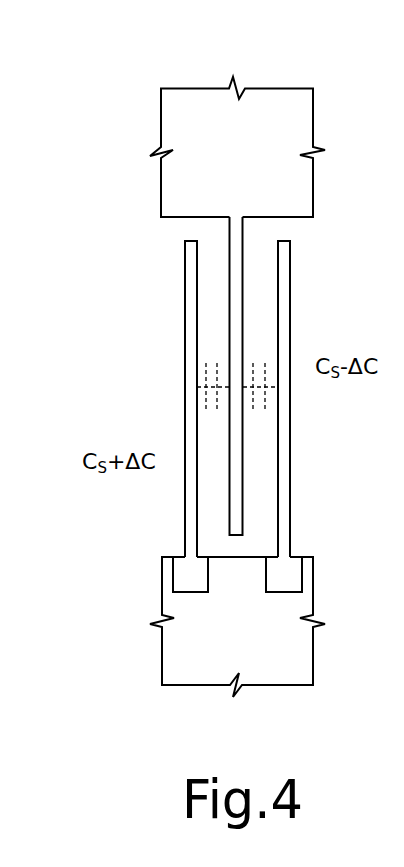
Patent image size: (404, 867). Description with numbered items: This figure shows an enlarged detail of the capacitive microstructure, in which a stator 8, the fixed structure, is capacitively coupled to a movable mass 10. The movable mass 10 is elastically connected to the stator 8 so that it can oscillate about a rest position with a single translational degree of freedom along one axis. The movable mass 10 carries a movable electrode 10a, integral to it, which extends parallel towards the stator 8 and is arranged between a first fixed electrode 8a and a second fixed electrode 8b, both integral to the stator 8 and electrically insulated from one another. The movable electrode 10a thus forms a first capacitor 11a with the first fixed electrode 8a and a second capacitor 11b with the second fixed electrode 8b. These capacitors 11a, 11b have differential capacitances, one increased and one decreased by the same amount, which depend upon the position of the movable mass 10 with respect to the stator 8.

The movable mass 10 is at (208, 91).
The movable electrodes 10a is at (230, 229).
The stator 8 is at (257, 685).
The first fixed electrodes 8a is at (185, 482).
The second fixed electrodes 8b is at (290, 472).
The first capacitor 11a is at (198, 393).
The second capacitor 11b is at (263, 363).